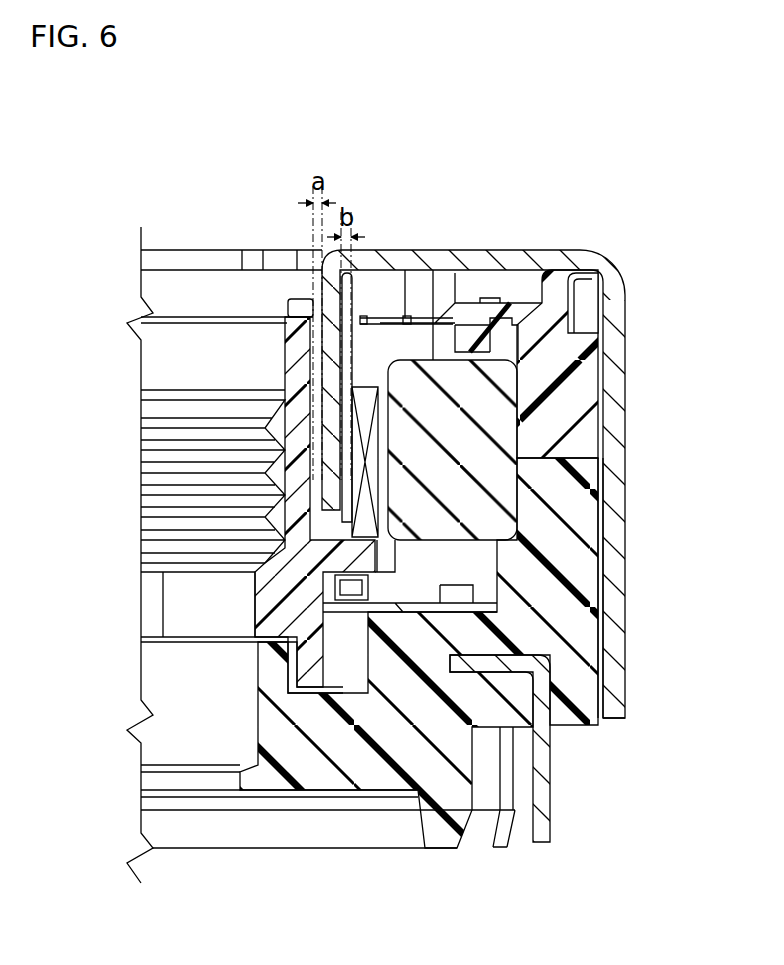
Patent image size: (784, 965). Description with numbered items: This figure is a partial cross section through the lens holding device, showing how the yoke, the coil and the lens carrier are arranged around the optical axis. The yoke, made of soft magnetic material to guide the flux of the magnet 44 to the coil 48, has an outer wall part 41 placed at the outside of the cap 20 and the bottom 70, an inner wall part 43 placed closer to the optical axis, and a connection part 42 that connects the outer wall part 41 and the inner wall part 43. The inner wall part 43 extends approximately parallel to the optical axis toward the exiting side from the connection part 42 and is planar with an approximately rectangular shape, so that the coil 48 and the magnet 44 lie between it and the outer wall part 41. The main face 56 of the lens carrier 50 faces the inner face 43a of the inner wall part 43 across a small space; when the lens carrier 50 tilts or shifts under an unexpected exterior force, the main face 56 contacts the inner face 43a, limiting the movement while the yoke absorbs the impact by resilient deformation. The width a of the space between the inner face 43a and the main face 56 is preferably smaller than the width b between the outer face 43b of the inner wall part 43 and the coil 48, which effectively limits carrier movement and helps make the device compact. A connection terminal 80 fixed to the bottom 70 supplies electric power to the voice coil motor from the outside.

The cap 20 is at (555, 299).
The outer wall part 41 is at (627, 376).
The connection part 42 is at (483, 250).
The inner wall part 43 is at (277, 241).
The inner face 43a is at (312, 368).
The outer face 43b is at (343, 300).
The magnet 44 is at (490, 456).
The coil 48 is at (364, 418).
The lens carrier 50 is at (280, 616).
The main face 56 is at (315, 476).
The bottom 70 is at (577, 626).
The connection terminal 80 is at (543, 790).